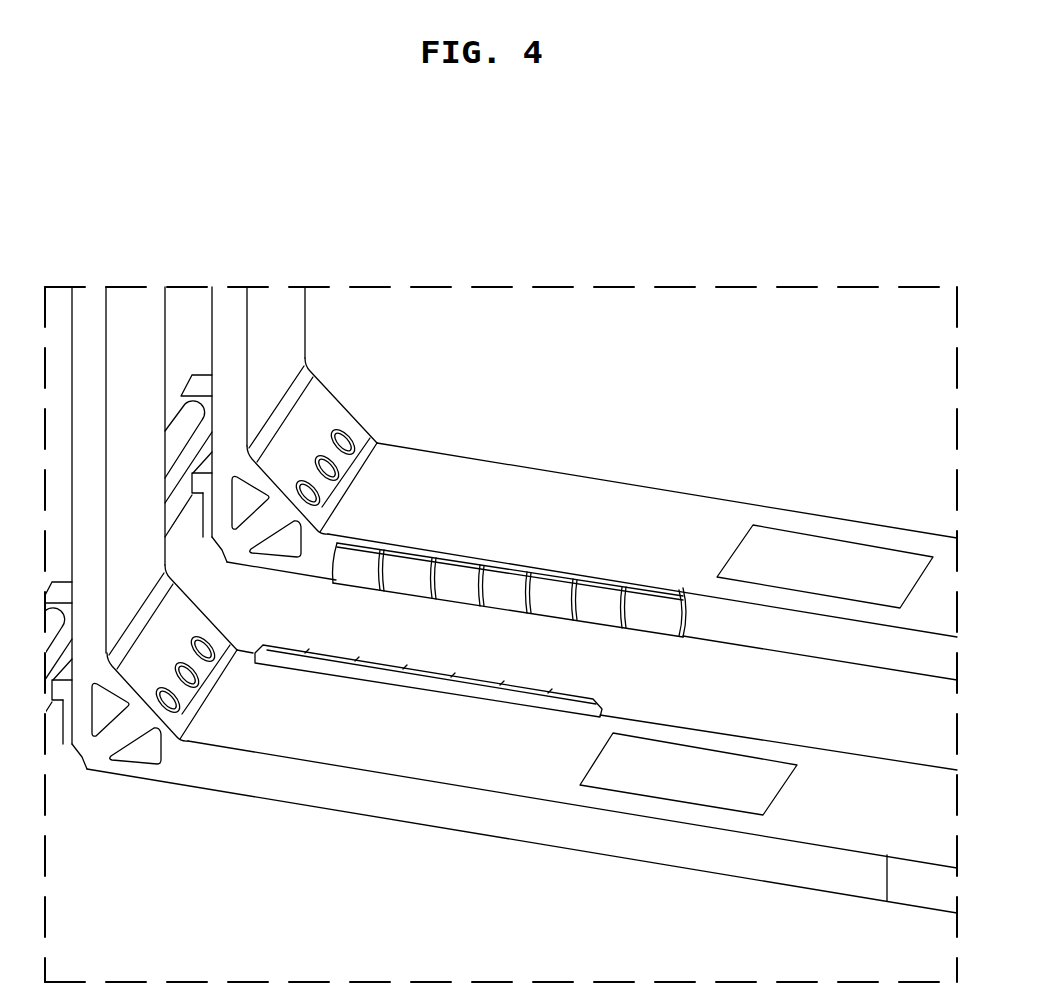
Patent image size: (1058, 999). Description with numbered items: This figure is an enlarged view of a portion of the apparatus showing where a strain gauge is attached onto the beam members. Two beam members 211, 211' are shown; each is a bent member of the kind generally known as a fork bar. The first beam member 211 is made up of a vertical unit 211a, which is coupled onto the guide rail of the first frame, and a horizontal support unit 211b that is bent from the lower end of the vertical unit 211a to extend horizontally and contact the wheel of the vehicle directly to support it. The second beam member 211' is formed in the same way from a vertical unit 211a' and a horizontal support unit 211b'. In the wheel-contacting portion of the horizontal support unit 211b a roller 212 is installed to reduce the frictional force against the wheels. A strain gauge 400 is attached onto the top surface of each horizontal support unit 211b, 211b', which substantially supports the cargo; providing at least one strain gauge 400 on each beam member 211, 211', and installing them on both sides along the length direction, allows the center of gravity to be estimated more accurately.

The beam member 211 is at (510, 600).
The vertical unit 211a is at (131, 716).
The horizontal support unit 211b is at (572, 775).
The beam member 211' is at (580, 440).
The vertical unit 211a' is at (287, 398).
The horizontal support unit 211b' is at (642, 438).
The roller 212 is at (507, 593).
The strain gauge 400 is at (763, 584).